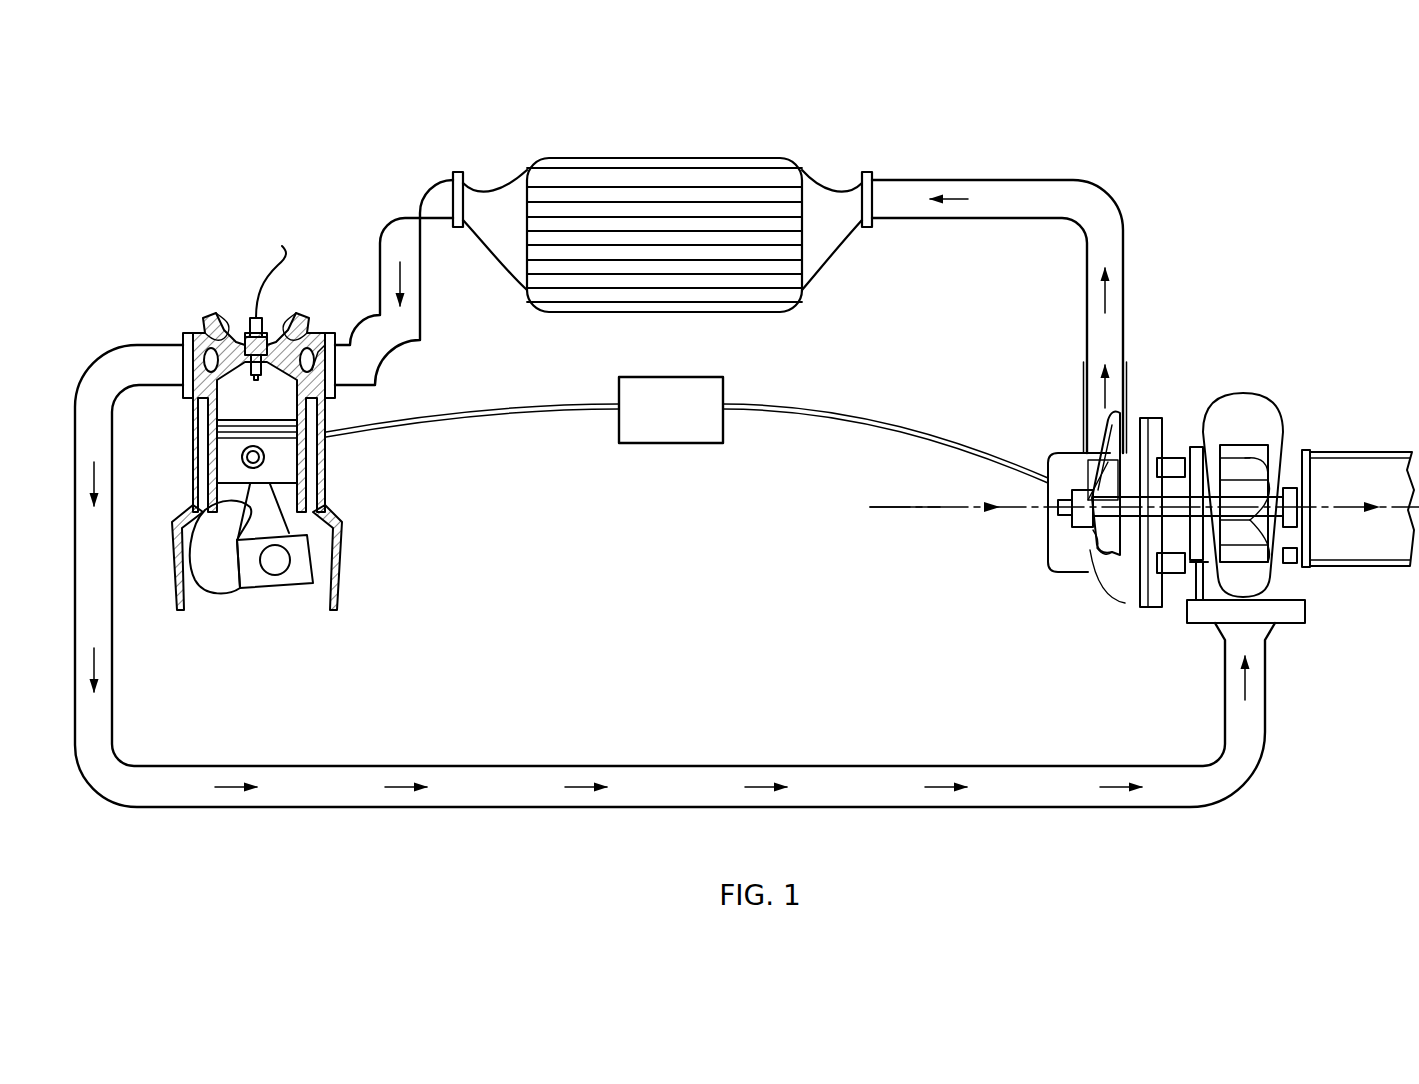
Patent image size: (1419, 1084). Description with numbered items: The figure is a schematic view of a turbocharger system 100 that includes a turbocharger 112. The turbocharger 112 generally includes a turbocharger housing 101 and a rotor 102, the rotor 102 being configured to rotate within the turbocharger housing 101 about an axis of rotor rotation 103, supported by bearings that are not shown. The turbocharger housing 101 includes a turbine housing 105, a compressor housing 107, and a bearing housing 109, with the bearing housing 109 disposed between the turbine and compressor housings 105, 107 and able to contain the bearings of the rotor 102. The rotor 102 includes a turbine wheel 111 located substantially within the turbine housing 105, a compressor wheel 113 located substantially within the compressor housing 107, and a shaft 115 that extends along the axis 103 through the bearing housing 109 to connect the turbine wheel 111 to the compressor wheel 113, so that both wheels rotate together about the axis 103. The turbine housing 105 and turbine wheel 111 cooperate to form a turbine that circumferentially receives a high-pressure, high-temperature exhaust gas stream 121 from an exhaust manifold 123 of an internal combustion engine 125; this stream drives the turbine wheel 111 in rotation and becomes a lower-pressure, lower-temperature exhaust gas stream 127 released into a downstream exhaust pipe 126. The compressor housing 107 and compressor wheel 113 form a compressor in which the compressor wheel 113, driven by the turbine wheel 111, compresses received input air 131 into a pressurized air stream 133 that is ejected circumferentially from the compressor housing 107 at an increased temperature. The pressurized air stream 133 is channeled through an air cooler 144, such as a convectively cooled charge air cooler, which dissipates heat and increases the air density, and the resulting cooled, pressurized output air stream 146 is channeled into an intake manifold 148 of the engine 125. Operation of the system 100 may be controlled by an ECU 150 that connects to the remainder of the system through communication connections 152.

The turbocharger system 100 is at (747, 483).
The turbocharger housing 101 is at (1173, 458).
The rotor 102 is at (1183, 573).
The axis of rotor rotation 103 is at (898, 510).
The turbine housing 105 is at (1252, 454).
The compressor housing 107 is at (1069, 528).
The bearing housing 109 is at (1171, 481).
The turbine wheel 111 is at (1232, 490).
The turbocharger 112 is at (1250, 407).
The compressor wheel 113 is at (1088, 562).
The shaft 115 is at (1188, 590).
The exhaust gas stream 121 is at (768, 785).
The exhaust manifold 123 is at (207, 336).
The internal combustion engine 125 is at (292, 470).
The downstream exhaust pipe 126 is at (1360, 453).
The exhaust gas stream 127 is at (1346, 507).
The input air 131 is at (937, 506).
The pressurized air stream 133 is at (963, 192).
The air cooler 144 is at (661, 186).
The output air stream 146 is at (397, 272).
The intake manifold 148 is at (332, 380).
The ECU 150 is at (669, 445).
The communication connections 152 is at (816, 423).